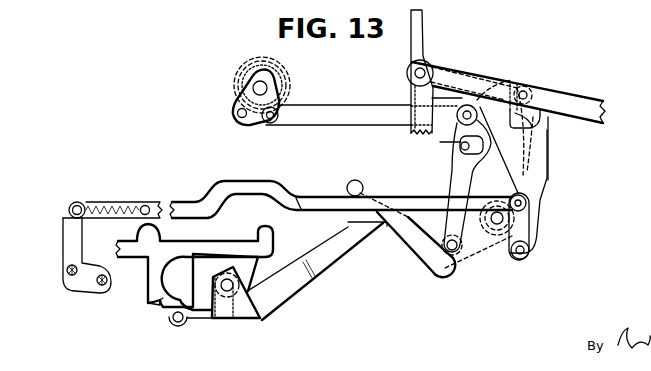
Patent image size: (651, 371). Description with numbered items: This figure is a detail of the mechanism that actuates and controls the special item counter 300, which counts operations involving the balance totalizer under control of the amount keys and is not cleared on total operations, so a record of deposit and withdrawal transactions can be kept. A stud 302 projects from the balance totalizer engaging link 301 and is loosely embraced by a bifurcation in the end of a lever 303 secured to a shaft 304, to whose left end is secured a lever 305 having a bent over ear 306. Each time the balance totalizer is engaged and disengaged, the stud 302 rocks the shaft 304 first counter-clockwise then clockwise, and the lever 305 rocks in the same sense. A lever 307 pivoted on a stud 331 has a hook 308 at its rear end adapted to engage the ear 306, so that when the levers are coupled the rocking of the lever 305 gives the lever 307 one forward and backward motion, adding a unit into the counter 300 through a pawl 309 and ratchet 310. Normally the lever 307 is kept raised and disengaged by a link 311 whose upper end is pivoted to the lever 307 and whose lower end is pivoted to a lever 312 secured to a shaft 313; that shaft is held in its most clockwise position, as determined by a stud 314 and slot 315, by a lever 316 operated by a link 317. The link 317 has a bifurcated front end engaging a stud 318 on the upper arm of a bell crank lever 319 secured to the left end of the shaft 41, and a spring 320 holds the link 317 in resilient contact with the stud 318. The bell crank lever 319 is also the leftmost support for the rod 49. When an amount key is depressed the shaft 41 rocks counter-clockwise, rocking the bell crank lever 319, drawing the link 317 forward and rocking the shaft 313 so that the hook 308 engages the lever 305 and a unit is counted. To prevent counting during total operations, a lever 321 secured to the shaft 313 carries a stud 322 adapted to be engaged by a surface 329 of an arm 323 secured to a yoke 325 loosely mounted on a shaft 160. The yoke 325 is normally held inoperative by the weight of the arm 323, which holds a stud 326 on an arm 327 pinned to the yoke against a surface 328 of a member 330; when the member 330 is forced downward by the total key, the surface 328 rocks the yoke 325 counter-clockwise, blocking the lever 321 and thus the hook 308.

The special item counter 300 is at (246, 70).
The ratchet 310 is at (244, 86).
The pawl 309 is at (236, 100).
The stud 331 is at (271, 123).
The lever 307 is at (343, 93).
The hook 308 is at (517, 80).
The stud 302 is at (529, 88).
The balance totalizer engaging link 301 is at (583, 96).
The bent over ear 306 is at (541, 122).
The lever 305 is at (549, 151).
The lever 303 is at (531, 170).
The shaft 304 is at (504, 218).
The lever 316 is at (527, 213).
The shaft 313 is at (529, 255).
The lever 312 is at (472, 246).
The lever 321 is at (418, 244).
The stud 314 is at (461, 148).
The link 311 is at (458, 171).
The slot 315 is at (480, 156).
The stud 322 is at (357, 180).
The surface 329 is at (348, 223).
The link 317 is at (205, 187).
The spring 320 is at (97, 202).
The stud 318 is at (69, 209).
The bell crank lever 319 is at (64, 231).
The shaft 41 is at (67, 270).
The rod 49 is at (97, 285).
The member 330 is at (190, 249).
The shaft 160 is at (224, 282).
The surface 328 is at (152, 306).
The stud 326 is at (174, 323).
The arm 327 is at (192, 312).
The yoke 325 is at (222, 319).
The arm 323 is at (282, 295).